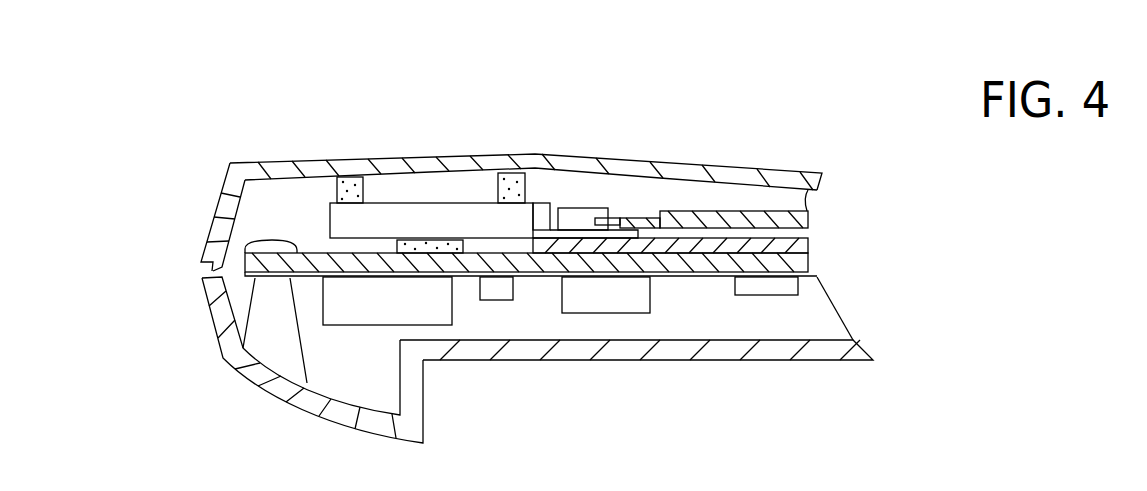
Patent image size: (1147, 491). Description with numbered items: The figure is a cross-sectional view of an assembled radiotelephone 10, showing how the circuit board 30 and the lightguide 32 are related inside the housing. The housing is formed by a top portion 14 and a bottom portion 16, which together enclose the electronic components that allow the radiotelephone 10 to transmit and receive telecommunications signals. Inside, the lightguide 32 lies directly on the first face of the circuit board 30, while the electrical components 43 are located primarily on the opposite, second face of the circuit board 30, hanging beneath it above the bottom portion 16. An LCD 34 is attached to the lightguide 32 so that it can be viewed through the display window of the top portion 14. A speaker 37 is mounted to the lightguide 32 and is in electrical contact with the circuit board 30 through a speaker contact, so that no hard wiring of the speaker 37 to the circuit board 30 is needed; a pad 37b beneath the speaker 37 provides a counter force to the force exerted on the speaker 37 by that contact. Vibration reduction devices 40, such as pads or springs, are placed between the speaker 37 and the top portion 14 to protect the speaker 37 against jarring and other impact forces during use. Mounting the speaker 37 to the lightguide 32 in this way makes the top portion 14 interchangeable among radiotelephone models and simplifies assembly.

The radiotelephone 10 is at (238, 146).
The top portion 14 is at (735, 165).
The bottom portion 16 is at (740, 362).
The circuit board 30 is at (803, 265).
The lightguide 32 is at (793, 240).
The LCD 34 is at (807, 211).
The speaker 37 is at (452, 220).
The pad 37b is at (393, 242).
The vibration reduction devices 40 is at (338, 195).
The electrical components 43 is at (768, 290).